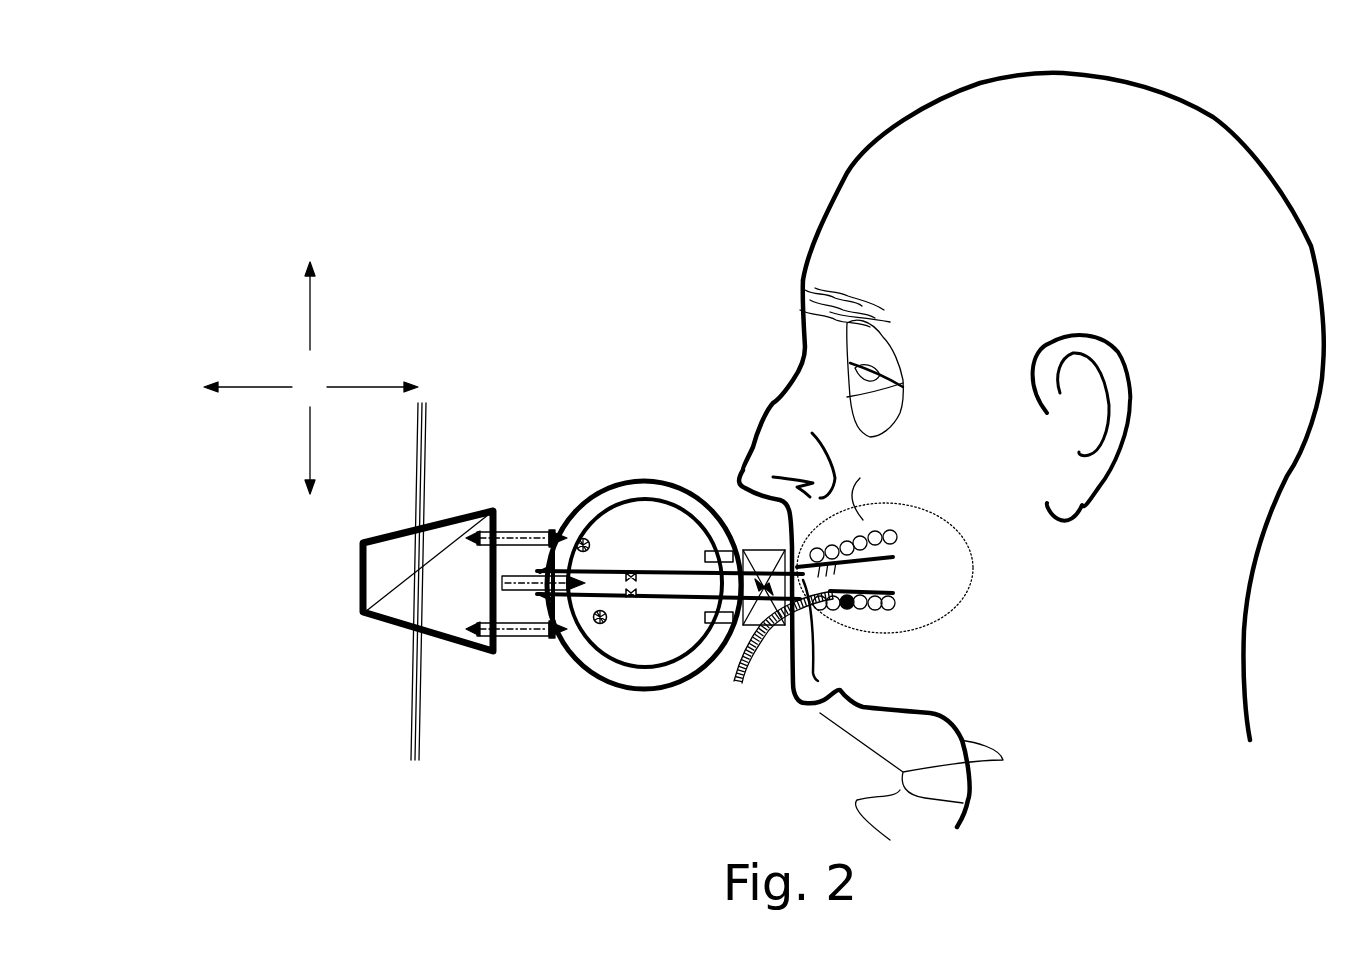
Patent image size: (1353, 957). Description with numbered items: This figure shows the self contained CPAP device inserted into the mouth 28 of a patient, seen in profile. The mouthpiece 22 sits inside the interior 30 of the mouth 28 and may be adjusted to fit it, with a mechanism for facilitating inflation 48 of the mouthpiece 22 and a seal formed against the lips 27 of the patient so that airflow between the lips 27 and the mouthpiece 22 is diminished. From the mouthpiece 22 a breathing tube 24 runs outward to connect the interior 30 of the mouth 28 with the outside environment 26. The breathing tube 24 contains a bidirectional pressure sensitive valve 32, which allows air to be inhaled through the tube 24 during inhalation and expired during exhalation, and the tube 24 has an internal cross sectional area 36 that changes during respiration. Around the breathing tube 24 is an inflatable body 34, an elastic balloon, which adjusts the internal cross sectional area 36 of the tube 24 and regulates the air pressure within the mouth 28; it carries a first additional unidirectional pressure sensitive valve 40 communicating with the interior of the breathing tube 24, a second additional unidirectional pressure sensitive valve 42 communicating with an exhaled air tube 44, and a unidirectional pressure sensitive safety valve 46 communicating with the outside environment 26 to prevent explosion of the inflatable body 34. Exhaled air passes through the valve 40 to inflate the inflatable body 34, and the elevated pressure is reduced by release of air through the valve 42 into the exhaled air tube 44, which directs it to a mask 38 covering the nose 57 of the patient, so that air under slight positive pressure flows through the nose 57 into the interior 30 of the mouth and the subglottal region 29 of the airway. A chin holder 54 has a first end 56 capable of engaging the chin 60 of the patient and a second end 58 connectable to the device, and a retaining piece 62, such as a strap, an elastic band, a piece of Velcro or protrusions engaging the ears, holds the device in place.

The mouthpiece 22 is at (977, 559).
The breathing tube 24 is at (625, 505).
The outside environment 26 is at (311, 378).
The lips 27 is at (793, 547).
The mouth 28 is at (860, 573).
The subglottal region 29 is at (1143, 637).
The interior of mouth 30 is at (868, 582).
The bidirectional pressure sensitive valve 32 is at (860, 478).
The inflatable body 34 is at (610, 530).
The internal cross sectional area 36 is at (565, 505).
The mask 38 is at (343, 540).
The first additional unidirectional pressure sensitive valve 40 is at (738, 648).
The second additional unidirectional pressure sensitive valve 42 is at (477, 643).
The exhaled air tube 44 is at (405, 627).
The unidirectional pressure sensitive safety valve 46 is at (502, 580).
The mechanism for facilitating inflation 48 is at (765, 640).
The chin holder 54 is at (897, 834).
The first end 56 is at (667, 650).
The nose 57 is at (790, 410).
The second end 58 is at (923, 777).
The chin 60 is at (807, 677).
The retaining piece 62 is at (415, 400).